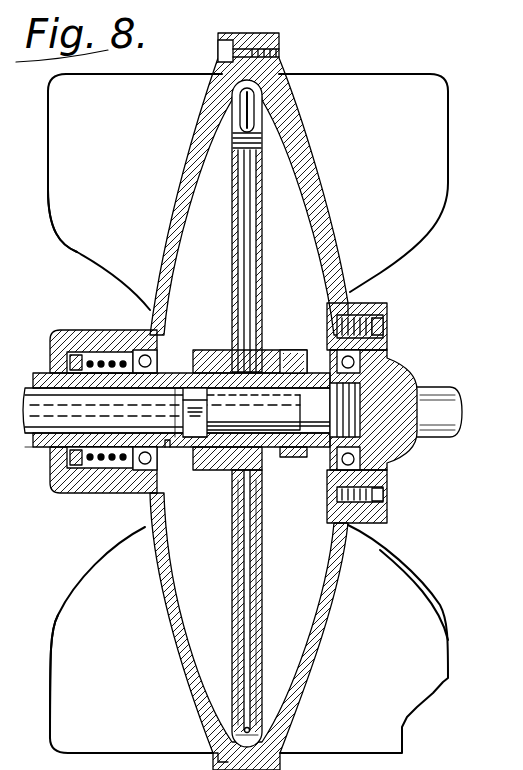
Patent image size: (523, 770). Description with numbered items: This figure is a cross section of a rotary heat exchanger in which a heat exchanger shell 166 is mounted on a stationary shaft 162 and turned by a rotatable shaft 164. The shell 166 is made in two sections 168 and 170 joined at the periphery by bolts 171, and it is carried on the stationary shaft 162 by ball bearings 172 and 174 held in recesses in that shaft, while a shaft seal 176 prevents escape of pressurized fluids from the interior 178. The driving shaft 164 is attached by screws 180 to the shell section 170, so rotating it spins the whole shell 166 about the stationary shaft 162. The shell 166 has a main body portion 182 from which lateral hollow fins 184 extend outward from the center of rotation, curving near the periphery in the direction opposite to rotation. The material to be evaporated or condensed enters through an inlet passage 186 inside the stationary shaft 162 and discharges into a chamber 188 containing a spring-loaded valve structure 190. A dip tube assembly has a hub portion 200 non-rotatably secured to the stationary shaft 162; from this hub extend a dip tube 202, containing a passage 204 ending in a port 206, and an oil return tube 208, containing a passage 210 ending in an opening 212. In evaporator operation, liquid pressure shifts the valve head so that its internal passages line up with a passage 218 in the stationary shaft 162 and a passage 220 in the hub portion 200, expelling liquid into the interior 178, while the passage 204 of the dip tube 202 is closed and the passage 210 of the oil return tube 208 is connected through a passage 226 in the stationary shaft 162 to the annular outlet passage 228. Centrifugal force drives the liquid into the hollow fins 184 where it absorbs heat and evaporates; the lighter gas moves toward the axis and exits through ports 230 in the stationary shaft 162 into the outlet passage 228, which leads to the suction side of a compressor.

The stationary shaft 162 is at (32, 450).
The rotatable shaft 164 is at (431, 431).
The heat exchanger shell 166 is at (92, 276).
The shell section 168 is at (150, 565).
The shell section 170 is at (356, 548).
The bolts 171 is at (236, 34).
The ball bearing 172 is at (390, 358).
The ball bearing 174 is at (130, 340).
The shaft seal 176 is at (78, 334).
The interior 178 is at (352, 289).
The screws 180 is at (388, 320).
The main body portion 182 is at (350, 525).
The hollow fins 184 is at (388, 140).
The inlet passage 186 is at (26, 405).
The chamber 188 is at (176, 448).
The valve structure 190 is at (322, 397).
The hub portion 200 is at (220, 350).
The dip tube 202 is at (263, 266).
The passage 204 is at (303, 197).
The port 206 is at (250, 107).
The oil return tube 208 is at (262, 634).
The passage 210 is at (250, 610).
The opening 212 is at (236, 730).
The passage 218 is at (281, 370).
The passage 220 is at (286, 478).
The passage 226 is at (165, 448).
The annular outlet passage 228 is at (160, 393).
The ports 230 is at (148, 507).